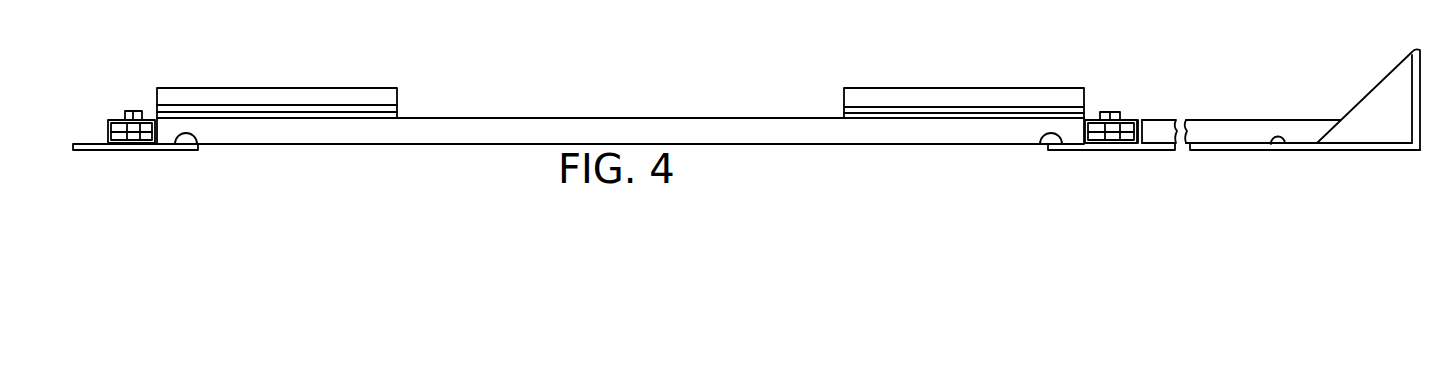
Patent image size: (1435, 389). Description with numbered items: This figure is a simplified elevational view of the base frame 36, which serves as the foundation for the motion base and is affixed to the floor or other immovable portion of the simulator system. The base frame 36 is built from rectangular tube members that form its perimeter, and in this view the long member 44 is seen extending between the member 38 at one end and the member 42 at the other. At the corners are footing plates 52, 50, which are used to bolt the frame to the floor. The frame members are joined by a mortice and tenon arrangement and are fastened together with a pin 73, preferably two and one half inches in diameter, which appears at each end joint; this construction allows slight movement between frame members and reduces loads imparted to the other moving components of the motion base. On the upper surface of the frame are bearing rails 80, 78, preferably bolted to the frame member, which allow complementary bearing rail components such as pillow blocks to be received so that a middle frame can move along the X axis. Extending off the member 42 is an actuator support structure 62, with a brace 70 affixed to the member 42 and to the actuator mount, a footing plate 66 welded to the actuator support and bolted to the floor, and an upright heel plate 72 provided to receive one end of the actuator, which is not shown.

The base frame 36 is at (624, 99).
The rectangular tube member 38 is at (113, 120).
The rectangular tube member 42 is at (1124, 120).
The rectangular tube member 44 is at (500, 117).
The footing plate 50 is at (1040, 144).
The footing plate 52 is at (197, 144).
The actuator support structure 62 is at (1307, 113).
The footing plate 66 is at (1271, 144).
The brace 70 is at (1215, 125).
The heel plate 72 is at (1420, 110).
The pin 73 is at (135, 111).
The bearing rail 78 is at (955, 87).
The bearing rail 80 is at (296, 87).